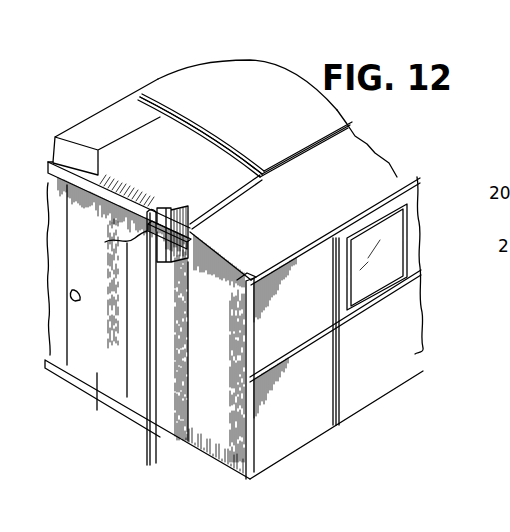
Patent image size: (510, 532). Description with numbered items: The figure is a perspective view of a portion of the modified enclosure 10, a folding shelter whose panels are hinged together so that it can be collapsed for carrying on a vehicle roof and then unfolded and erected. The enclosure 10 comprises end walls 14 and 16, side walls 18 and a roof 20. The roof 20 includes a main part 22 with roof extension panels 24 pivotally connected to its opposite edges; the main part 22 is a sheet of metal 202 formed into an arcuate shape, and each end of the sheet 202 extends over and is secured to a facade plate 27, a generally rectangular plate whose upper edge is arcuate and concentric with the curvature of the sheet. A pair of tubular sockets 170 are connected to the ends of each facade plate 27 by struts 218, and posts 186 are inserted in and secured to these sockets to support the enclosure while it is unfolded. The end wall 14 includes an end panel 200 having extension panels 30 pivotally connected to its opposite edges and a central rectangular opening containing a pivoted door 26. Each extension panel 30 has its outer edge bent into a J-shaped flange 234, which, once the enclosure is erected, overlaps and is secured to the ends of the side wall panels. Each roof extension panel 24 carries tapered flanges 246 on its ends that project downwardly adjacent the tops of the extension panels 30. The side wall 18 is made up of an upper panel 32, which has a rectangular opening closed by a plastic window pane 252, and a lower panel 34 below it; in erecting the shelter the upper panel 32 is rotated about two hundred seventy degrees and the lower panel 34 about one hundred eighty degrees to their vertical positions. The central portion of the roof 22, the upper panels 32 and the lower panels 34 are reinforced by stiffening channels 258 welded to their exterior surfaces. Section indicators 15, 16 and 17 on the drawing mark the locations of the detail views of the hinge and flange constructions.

The enclosure 10 is at (137, 68).
The roof 20 is at (201, 105).
The roof main part 22 is at (230, 64).
The roof extension panel 24 is at (376, 162).
The facade plate 27 is at (56, 150).
The sheet of metal 202 is at (100, 118).
The stiffening channel 258 is at (235, 150).
The strut 218 is at (160, 206).
The tubular socket 170 is at (110, 241).
The tapered flange 246 is at (239, 284).
The plastic window pane 252 is at (401, 230).
The pivoted door 26 is at (71, 312).
The end panel 200 is at (146, 388).
The post 186 is at (157, 464).
The end wall 14 is at (180, 455).
The extension panel 30 is at (230, 465).
The J-shaped flange 234 is at (253, 456).
The side wall 18 is at (319, 437).
The upper panel 32 is at (277, 337).
The lower panel 34 is at (316, 411).
The section line 15- 15 is at (225, 88).
The end wall 16 is at (57, 273).
The section line 17- 17 is at (147, 127).